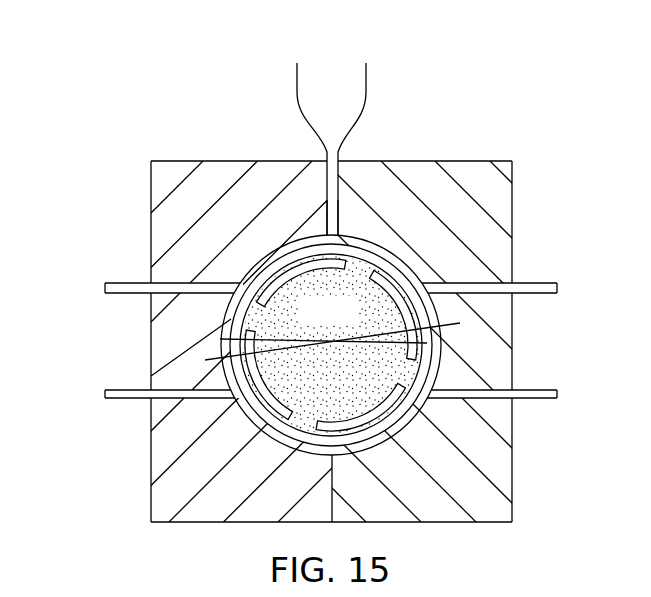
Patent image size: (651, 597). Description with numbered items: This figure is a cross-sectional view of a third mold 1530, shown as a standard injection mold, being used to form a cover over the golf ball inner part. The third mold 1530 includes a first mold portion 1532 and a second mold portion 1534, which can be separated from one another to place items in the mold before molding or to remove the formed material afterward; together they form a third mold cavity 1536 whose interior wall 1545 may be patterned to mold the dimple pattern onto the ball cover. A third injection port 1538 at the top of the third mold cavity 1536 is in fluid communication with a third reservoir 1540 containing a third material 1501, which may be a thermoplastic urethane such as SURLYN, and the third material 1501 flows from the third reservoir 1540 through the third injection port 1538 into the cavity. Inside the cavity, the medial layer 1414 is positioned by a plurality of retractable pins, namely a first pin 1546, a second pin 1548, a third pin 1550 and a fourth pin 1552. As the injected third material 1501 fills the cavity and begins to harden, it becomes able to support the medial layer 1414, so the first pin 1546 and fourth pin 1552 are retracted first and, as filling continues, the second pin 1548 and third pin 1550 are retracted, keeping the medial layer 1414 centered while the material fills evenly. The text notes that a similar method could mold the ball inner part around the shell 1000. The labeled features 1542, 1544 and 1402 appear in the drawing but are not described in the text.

The third mold 1530 is at (545, 187).
The first mold portion 1532 is at (470, 172).
The second mold portion 1534 is at (173, 172).
The lower left block portion 1542 is at (283, 421).
The lower right block portion 1544 is at (502, 523).
The third reservoir 1540 is at (309, 95).
The third injection port 1538 is at (347, 246).
The interior wall 1545 is at (277, 247).
The sample chamber 1402 is at (306, 321).
The shell 1000 is at (293, 270).
The medial layer 1414 is at (411, 356).
The third mold cavity 1536 is at (220, 339).
The third pin 1550 is at (105, 285).
The second pin 1548 is at (557, 286).
The fourth pin 1552 is at (105, 394).
The first pin 1546 is at (557, 394).
The third material 1501 is at (357, 57).